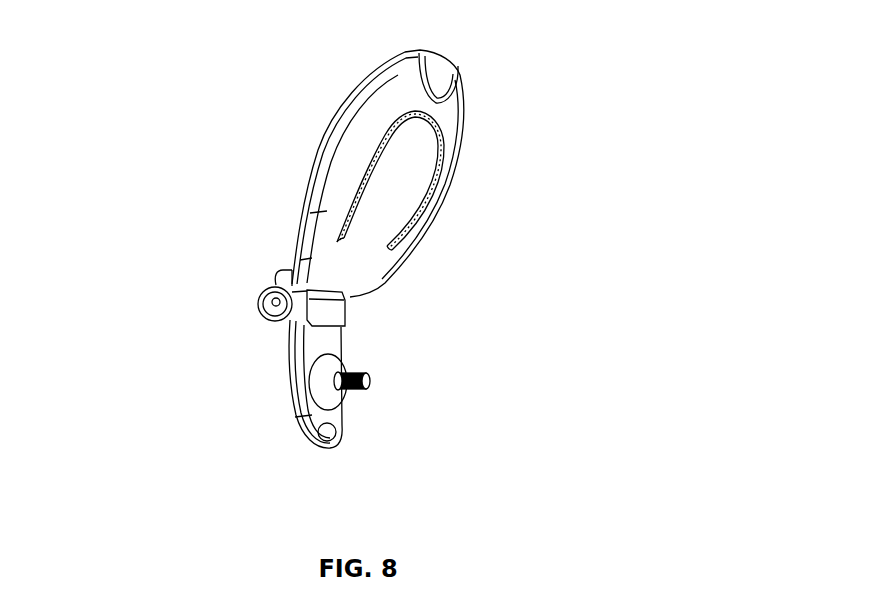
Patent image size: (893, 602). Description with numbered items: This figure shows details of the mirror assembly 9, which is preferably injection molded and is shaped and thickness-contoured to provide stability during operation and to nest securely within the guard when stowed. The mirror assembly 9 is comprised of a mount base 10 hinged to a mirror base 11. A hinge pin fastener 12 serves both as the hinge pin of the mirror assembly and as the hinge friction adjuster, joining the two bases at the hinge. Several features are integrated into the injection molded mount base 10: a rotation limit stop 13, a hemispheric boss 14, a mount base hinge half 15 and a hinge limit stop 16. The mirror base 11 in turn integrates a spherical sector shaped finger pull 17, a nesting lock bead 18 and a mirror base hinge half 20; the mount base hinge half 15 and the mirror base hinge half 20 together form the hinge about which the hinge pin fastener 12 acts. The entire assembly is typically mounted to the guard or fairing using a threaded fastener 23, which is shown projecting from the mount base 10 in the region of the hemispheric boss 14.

The mirror assembly 9 is at (440, 276).
The mount base 10 is at (370, 412).
The mirror base 11 is at (407, 156).
The hinge pin fastener 12 is at (268, 305).
The rotation limit stop 13 is at (338, 440).
The hemispheric boss 14 is at (313, 392).
The mount base hinge half 15 is at (338, 318).
The hinge limit stop 16 is at (270, 281).
The finger pull 17 is at (437, 85).
The nesting lock bead 18 is at (450, 156).
The mirror base hinge half 20 is at (252, 299).
The threaded fastener 23 is at (373, 389).